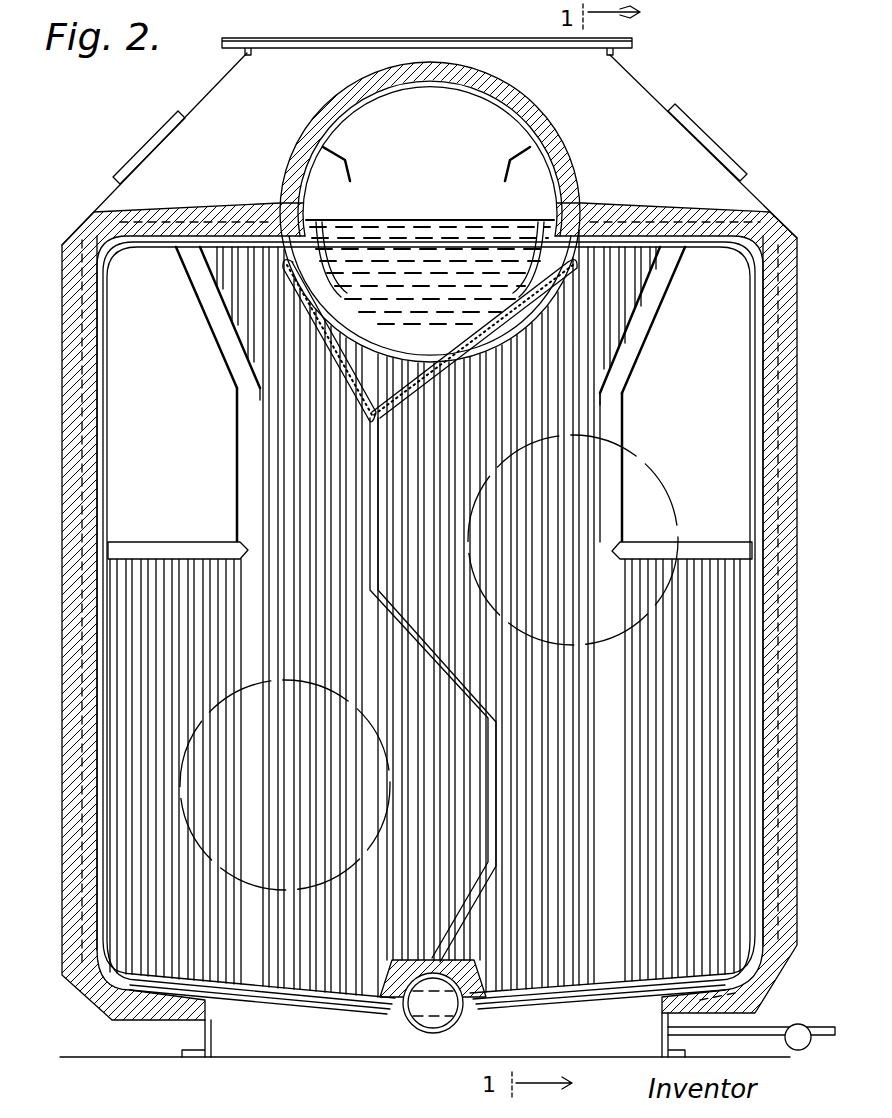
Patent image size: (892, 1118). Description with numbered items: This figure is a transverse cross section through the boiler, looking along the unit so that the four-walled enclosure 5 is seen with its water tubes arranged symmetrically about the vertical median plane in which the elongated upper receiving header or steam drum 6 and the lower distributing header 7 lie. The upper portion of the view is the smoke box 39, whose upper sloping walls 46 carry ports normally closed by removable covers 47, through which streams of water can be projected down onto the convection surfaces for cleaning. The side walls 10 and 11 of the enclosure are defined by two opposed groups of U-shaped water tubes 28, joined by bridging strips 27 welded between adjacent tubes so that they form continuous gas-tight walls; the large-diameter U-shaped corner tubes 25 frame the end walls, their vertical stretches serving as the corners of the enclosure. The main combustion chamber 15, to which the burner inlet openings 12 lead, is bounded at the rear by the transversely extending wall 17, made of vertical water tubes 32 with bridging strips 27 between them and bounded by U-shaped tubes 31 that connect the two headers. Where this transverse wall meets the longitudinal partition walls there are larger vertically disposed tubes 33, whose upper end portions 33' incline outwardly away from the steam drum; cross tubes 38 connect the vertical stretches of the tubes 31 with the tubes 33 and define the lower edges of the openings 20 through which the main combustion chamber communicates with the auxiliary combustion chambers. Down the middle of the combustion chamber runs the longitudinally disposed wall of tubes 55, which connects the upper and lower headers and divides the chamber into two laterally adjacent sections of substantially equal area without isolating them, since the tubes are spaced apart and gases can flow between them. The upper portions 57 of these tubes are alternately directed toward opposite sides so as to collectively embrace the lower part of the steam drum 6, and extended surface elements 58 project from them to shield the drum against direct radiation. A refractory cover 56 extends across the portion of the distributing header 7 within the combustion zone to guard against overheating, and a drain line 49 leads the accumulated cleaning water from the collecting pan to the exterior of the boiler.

The four-walled enclosure 5 is at (792, 208).
The upper receiving header 6 is at (500, 150).
The lower distributing header 7 is at (412, 1033).
The side wall 10 is at (95, 490).
The side wall 11 is at (765, 458).
The inlet opening 12 is at (270, 875).
The combustion chamber 15 is at (586, 726).
The transversely extending wall 17 is at (285, 431).
The openings 20 is at (205, 330).
The U-shaped tubes 25 is at (128, 598).
The bridging strips 27 is at (590, 523).
The water tubes 28 is at (105, 432).
The U-shaped tubes 31 is at (110, 380).
The vertical water tubes 32 is at (615, 292).
The vertically disposed tubes 33 is at (429, 455).
The upper end portions 33' is at (430, 320).
The cross tubes 38 is at (150, 542).
The smoke box 39 is at (386, 38).
The upper sloping walls 46 is at (210, 90).
The removable covers 47 is at (130, 158).
The drain line 49 is at (772, 1040).
The wall of tubes 55 is at (370, 466).
The refractory cover 56 is at (396, 1005).
The upper portions 57 is at (300, 322).
The extended surface elements 58 is at (318, 352).